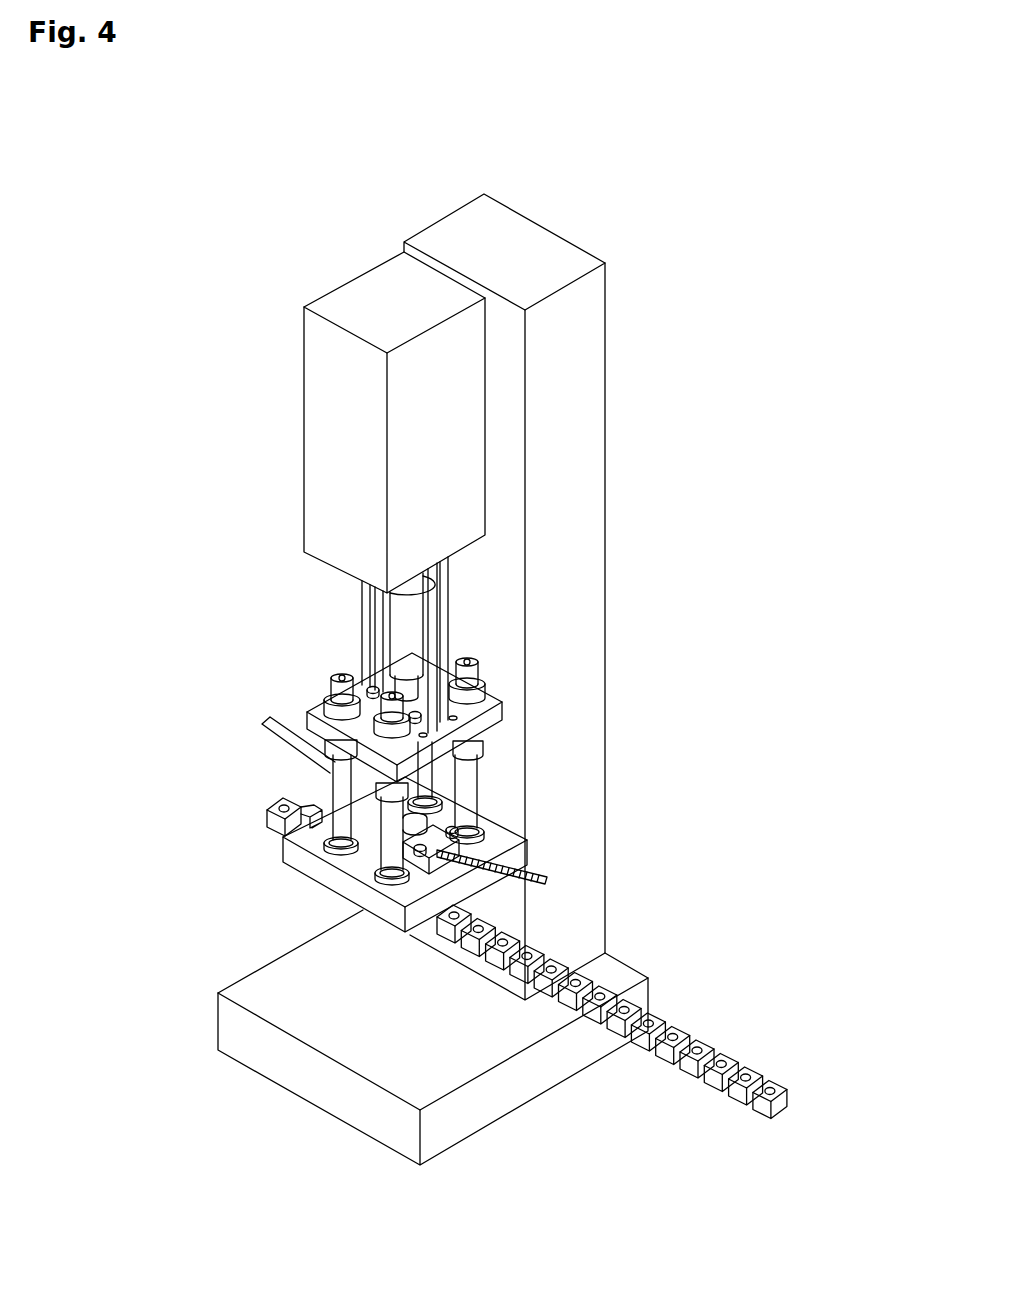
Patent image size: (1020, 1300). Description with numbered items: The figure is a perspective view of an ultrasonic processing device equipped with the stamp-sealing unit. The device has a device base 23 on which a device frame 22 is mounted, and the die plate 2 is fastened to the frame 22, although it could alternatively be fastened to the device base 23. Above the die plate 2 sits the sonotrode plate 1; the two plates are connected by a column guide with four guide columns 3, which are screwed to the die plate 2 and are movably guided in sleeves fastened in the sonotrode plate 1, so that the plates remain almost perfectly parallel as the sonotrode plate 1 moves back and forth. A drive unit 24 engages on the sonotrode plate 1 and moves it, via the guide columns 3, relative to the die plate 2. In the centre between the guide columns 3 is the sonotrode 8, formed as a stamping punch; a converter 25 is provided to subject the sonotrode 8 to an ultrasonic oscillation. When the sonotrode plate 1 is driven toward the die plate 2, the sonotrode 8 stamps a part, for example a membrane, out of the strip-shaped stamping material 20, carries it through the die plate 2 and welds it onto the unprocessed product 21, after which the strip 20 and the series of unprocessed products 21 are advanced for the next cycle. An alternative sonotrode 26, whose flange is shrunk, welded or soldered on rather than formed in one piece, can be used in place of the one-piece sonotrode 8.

The sonotrode plate 1 is at (353, 736).
The die plate 2 is at (307, 862).
The guide columns 3 is at (467, 778).
The sonotrode 8 is at (408, 813).
The strip 20 is at (548, 878).
The unprocessed product 21 is at (277, 818).
The device frame 22 is at (583, 407).
The device base 23 is at (330, 1098).
The drive unit 24 is at (650, 302).
The converter 25 is at (407, 628).
The sonotrode 26 is at (270, 720).